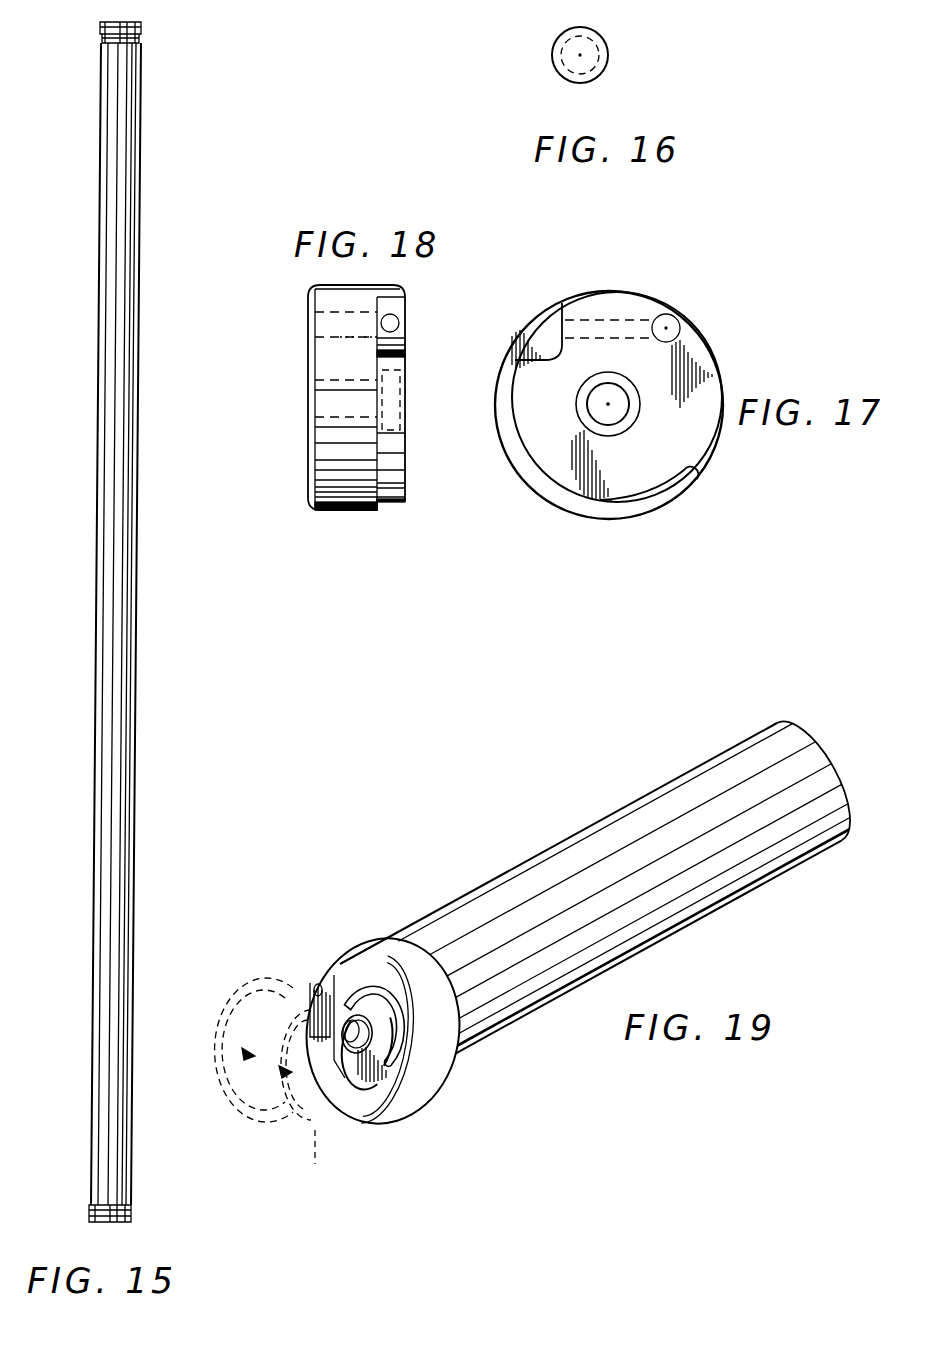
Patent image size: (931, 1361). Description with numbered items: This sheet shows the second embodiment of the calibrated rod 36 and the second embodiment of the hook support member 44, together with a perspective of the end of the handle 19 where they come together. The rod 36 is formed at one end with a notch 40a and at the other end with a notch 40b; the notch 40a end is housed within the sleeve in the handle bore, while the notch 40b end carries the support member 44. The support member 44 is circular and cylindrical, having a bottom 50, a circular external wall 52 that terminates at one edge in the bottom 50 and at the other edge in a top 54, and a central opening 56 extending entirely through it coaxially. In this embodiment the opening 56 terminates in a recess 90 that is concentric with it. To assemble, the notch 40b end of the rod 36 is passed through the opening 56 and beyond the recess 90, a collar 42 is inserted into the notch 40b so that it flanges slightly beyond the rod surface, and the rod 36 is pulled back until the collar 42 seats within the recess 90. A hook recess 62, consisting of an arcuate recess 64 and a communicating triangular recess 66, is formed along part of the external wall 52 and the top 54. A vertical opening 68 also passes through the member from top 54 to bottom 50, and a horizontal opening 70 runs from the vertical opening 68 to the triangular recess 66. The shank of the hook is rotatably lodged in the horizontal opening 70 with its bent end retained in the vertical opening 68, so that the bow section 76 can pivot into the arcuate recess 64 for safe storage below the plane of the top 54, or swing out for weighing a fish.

In FIG. 19, the handle 19 is at (502, 868).
In FIG. 15, the rod 36 is at (136, 604).
In FIG. 16, the rod 36 is at (610, 54).
In FIG. 19, the rod 36 is at (358, 1046).
In FIG. 15, the notch 40a is at (142, 38).
In FIG. 16, the notch 40a is at (599, 78).
In FIG. 15, the notch 40b is at (131, 1208).
In FIG. 19, the collar 42 is at (404, 1012).
In FIG. 17, the hook support member 44 is at (551, 516).
In FIG. 19, the hook support member 44 is at (434, 1096).
In FIG. 18, the bottom 50 is at (306, 468).
In FIG. 18, the circular external wall 52 is at (340, 492).
In FIG. 18, the top 54 is at (408, 476).
In FIG. 17, the top 54 is at (696, 372).
In FIG. 19, the top 54 is at (336, 978).
In FIG. 18, the opening 56 is at (306, 420).
In FIG. 17, the opening 56 is at (605, 420).
In FIG. 18, the hook recess 62 is at (389, 498).
In FIG. 17, the hook recess 62 is at (608, 502).
In FIG. 18, the arcuate recess 64 is at (399, 451).
In FIG. 17, the arcuate recess 64 is at (650, 506).
In FIG. 18, the triangular recess 66 is at (399, 354).
In FIG. 17, the triangular recess 66 is at (547, 333).
In FIG. 18, the vertical opening 68 is at (307, 340).
In FIG. 17, the vertical opening 68 is at (672, 327).
In FIG. 19, the vertical opening 68 is at (318, 982).
In FIG. 18, the horizontal opening 70 is at (396, 320).
In FIG. 17, the horizontal opening 70 is at (620, 318).
In FIG. 19, the bow section 76 is at (380, 1138).
In FIG. 18, the recess 90 is at (408, 414).
In FIG. 17, the recess 90 is at (628, 422).
In FIG. 19, the recess 90 is at (366, 990).